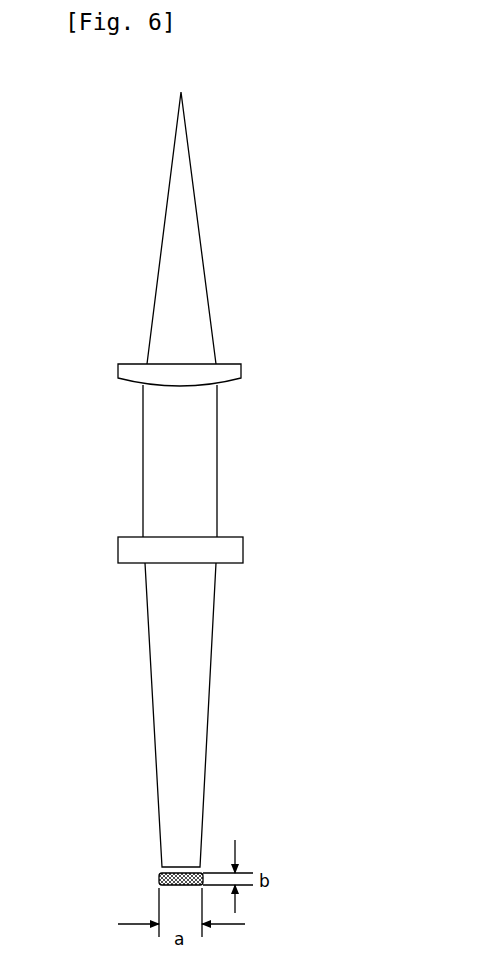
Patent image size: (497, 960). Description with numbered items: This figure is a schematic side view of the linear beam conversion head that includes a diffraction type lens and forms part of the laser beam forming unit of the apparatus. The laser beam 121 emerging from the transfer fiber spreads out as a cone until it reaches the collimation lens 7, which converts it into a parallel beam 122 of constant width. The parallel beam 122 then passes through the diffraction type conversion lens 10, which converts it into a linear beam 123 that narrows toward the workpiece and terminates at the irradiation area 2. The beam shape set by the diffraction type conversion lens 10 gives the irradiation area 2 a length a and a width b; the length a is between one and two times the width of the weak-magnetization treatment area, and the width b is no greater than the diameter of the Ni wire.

The laser beam 121 is at (193, 278).
The collimation lens 7 is at (235, 373).
The parallel beam 122 is at (205, 465).
The diffraction type conversion lens 10 is at (235, 550).
The linear beam 123 is at (196, 695).
The irradiation area 2 is at (160, 877).